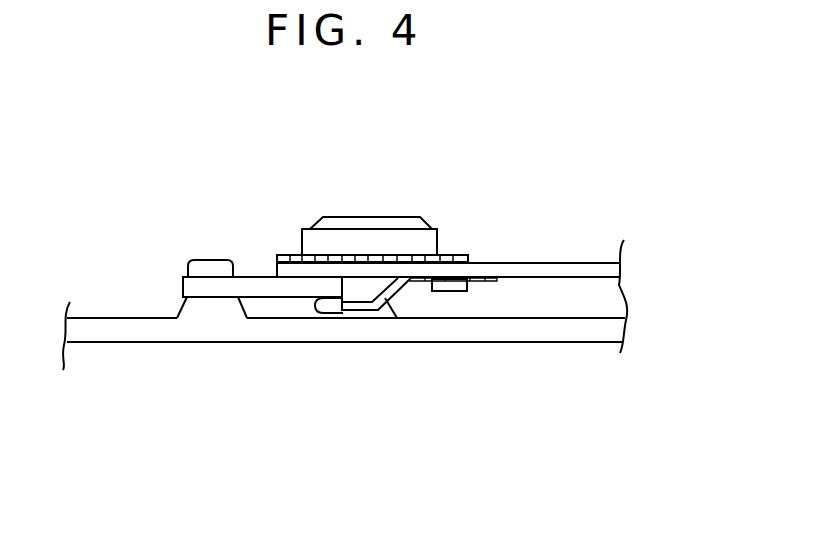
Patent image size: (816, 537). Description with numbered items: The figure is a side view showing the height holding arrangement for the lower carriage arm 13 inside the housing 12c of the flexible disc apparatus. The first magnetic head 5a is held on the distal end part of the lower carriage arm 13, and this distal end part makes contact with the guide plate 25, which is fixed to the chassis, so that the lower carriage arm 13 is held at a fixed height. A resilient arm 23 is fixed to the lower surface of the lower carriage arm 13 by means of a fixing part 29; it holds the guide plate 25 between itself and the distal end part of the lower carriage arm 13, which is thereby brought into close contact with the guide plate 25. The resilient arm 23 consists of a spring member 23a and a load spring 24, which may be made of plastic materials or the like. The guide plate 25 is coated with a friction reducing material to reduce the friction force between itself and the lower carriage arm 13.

The housing 12c is at (148, 333).
The guide plate 25 is at (248, 277).
The lower carriage arm 13 is at (575, 262).
The first magnetic head 5a is at (428, 220).
The resilient arm 23 is at (470, 380).
The spring member 23a is at (388, 300).
The load spring 24 is at (332, 315).
The fixing part 29 is at (467, 285).